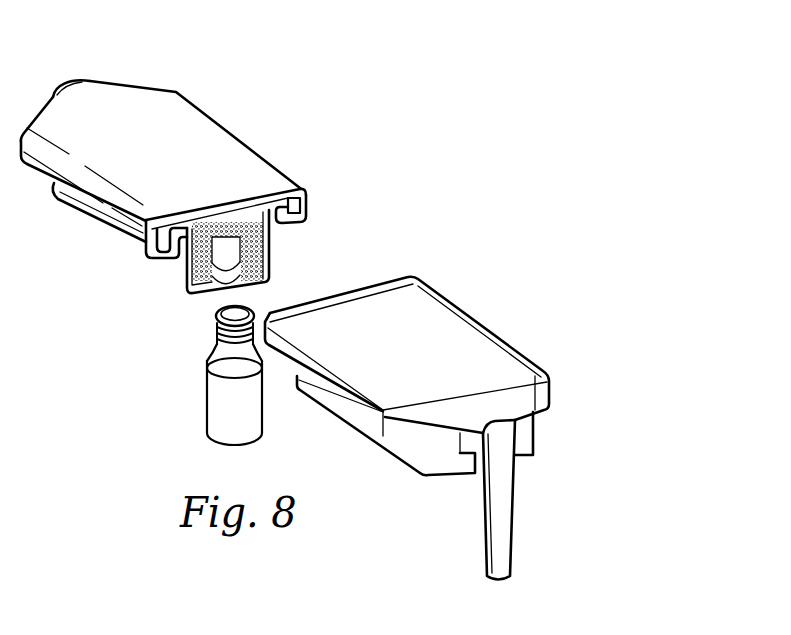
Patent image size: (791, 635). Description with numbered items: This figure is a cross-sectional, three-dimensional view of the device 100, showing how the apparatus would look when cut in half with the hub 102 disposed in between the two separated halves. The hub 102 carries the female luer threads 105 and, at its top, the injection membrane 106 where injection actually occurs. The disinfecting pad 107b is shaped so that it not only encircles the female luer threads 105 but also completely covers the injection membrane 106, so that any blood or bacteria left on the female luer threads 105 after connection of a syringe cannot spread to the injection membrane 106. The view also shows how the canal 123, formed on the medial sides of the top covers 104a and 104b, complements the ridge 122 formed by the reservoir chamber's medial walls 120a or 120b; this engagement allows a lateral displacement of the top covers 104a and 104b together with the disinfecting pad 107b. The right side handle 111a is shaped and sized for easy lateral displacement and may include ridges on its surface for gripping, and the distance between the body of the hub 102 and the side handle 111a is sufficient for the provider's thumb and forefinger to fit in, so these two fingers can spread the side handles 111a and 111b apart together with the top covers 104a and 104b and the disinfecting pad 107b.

The device 100 is at (352, 104).
The hub 102 is at (218, 402).
The top cover 104a is at (432, 327).
The top cover 104b is at (155, 142).
The female luer threads 105 is at (216, 336).
The injection membrane 106 is at (226, 309).
The disinfecting pad 107b is at (272, 240).
The right side handle 111a is at (502, 508).
The side handle 111b is at (70, 83).
The reservoir chamber medial wall 120a is at (188, 263).
The reservoir chamber medial wall 120b is at (262, 252).
The ridge 122 is at (292, 206).
The canal 123 is at (304, 207).